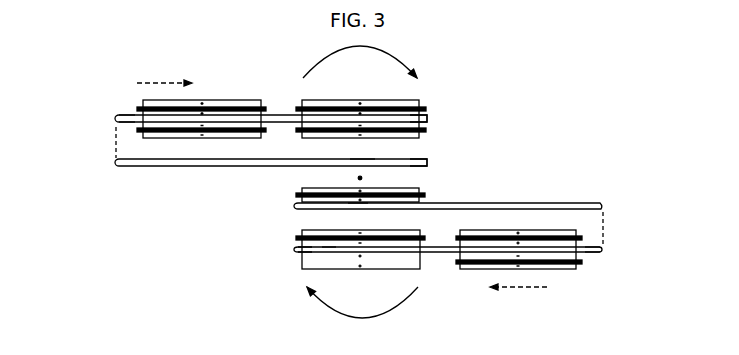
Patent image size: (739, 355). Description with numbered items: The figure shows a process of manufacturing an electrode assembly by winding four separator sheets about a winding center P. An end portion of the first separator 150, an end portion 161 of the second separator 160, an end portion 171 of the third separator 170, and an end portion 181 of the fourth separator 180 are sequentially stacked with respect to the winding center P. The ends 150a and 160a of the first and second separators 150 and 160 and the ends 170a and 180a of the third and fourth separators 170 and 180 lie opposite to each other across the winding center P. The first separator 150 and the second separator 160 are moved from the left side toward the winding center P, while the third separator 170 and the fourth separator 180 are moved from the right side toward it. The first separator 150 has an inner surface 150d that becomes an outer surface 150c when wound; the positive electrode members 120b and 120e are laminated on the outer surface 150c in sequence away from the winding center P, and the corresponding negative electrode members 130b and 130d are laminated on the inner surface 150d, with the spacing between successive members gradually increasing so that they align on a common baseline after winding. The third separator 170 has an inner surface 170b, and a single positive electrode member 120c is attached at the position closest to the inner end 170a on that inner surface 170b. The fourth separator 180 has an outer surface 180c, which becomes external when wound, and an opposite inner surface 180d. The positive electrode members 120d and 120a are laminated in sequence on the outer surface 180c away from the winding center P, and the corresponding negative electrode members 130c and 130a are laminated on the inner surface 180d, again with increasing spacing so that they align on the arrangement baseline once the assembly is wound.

The positive electrode member 120a is at (577, 269).
The positive electrode member 120b is at (418, 100).
The positive electrode member 120c is at (302, 190).
The positive electrode member 120d is at (300, 269).
The positive electrode member 120e is at (221, 100).
The negative electrode member 130a is at (580, 230).
The negative electrode member 130b is at (426, 131).
The negative electrode member 130c is at (299, 234).
The negative electrode member 130d is at (176, 133).
The first separator 150 is at (274, 115).
The end of first separator 150a is at (428, 119).
The outer surface of first separator 150c is at (117, 113).
The inner surface of first separator 150d is at (117, 124).
The second separator 160 is at (140, 167).
The end of second separator 160a is at (428, 163).
The end portion of second separator 161 is at (362, 160).
The third separator 170 is at (510, 203).
The inner end of third separator 170a is at (294, 207).
The inner surface of third separator 170b is at (296, 196).
The end portion of third separator 171 is at (358, 205).
The fourth separator 180 is at (437, 253).
The end of fourth separator 180a is at (296, 251).
The outer surface of fourth separator 180c is at (604, 254).
The inner surface of fourth separator 180d is at (603, 246).
The end portion of fourth separator 181 is at (329, 250).
The winding center P is at (370, 178).